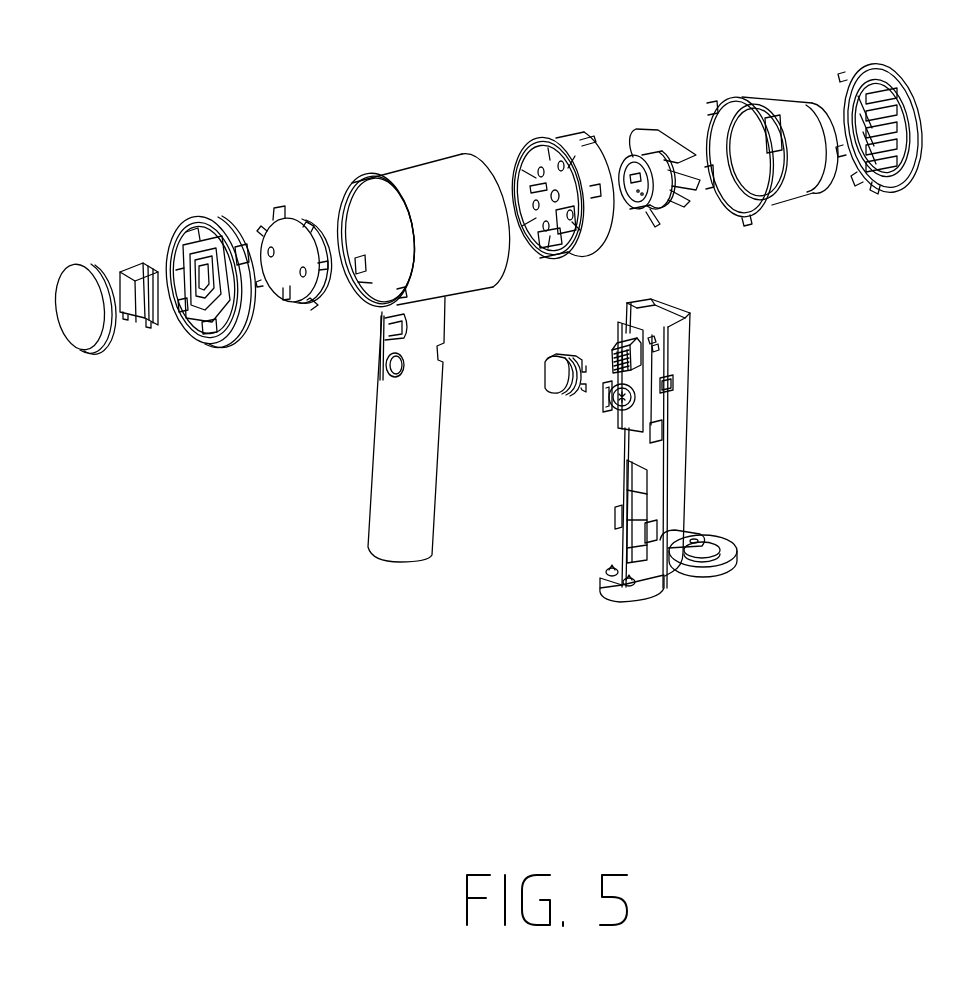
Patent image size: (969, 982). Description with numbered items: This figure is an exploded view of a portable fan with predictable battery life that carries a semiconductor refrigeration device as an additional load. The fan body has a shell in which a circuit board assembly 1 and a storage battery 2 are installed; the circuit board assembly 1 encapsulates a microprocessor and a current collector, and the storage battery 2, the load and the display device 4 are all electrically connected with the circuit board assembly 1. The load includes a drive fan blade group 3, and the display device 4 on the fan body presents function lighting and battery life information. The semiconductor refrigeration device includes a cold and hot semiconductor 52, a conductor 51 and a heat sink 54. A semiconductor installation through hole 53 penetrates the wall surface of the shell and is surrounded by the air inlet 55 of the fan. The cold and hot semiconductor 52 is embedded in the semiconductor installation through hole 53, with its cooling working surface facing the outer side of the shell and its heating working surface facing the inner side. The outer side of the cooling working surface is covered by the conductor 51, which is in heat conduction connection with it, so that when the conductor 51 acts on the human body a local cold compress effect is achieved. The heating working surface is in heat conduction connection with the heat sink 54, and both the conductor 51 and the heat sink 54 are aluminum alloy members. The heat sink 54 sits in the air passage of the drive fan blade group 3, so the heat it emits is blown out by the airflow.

The circuit board assembly 1 is at (632, 312).
The storage battery 2 is at (633, 453).
The drive fan blade group 3 is at (647, 128).
The display device 4 is at (610, 350).
The conductor 51 is at (53, 284).
The cold and hot semiconductor 52 is at (125, 265).
The semiconductor installation through hole 53 is at (183, 257).
The heat sink 54 is at (268, 222).
The air inlet 55 is at (850, 97).